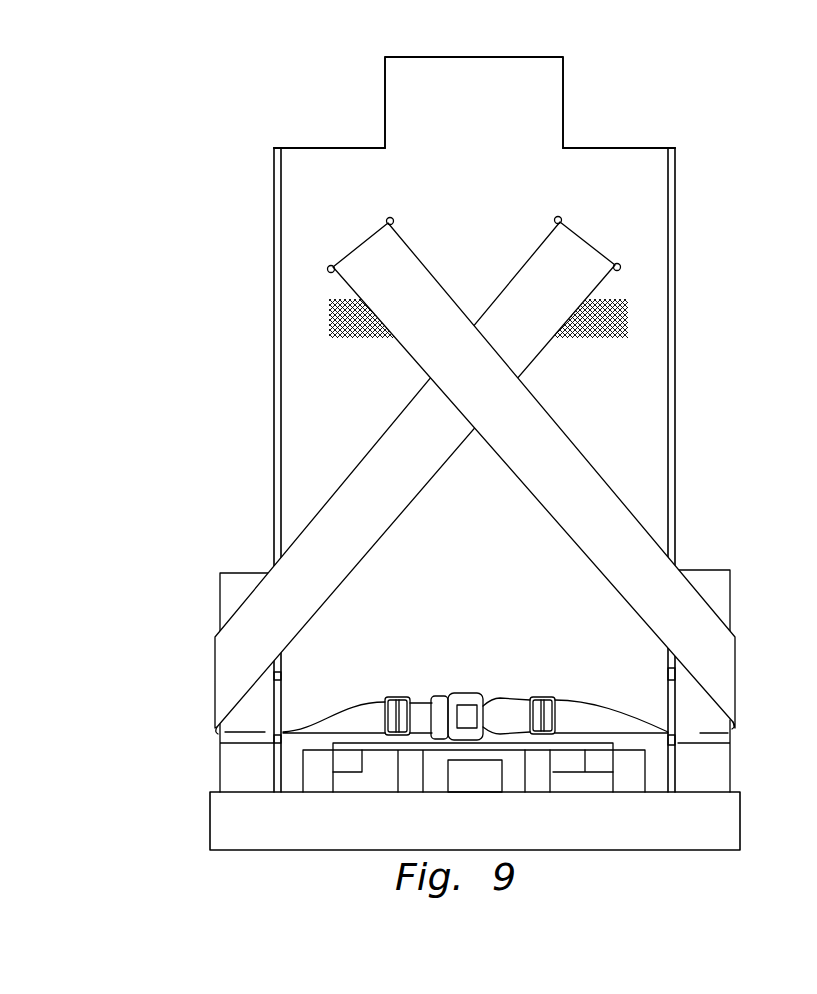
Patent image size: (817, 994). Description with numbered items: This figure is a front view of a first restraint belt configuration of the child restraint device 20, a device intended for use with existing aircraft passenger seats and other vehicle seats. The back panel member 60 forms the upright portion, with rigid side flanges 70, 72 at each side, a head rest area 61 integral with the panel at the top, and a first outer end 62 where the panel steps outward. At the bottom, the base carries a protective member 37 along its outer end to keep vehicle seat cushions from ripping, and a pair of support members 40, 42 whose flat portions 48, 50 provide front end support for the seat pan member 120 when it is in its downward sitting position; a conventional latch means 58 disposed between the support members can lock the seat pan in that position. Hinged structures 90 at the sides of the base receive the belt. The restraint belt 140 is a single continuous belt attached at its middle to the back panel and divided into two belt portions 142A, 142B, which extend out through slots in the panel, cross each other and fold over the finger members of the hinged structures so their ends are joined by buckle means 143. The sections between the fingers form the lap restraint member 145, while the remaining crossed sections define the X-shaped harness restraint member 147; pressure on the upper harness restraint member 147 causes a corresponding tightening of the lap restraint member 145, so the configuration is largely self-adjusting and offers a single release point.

The child restraint device 20 is at (235, 378).
The protective member 37 is at (738, 818).
The support member 40 is at (405, 783).
The support member 42 is at (538, 783).
The flat portion 48 is at (409, 750).
The flat portion 50 is at (527, 750).
The latch means 58 is at (480, 783).
The back panel member 60 is at (655, 428).
The head rest area 61 is at (565, 93).
The first outer end 62 is at (612, 147).
The rigid side flange 70 is at (274, 223).
The rigid side flange 72 is at (677, 287).
The hinged structure 90 is at (735, 768).
The seat pan member 120 is at (597, 745).
The restraint belt 140 is at (512, 476).
The belt portion 142A is at (578, 520).
The belt portion 142B is at (393, 502).
The buckle means 143 is at (484, 688).
The lap restraint member 145 is at (566, 688).
The harness restraint member 147 is at (518, 378).